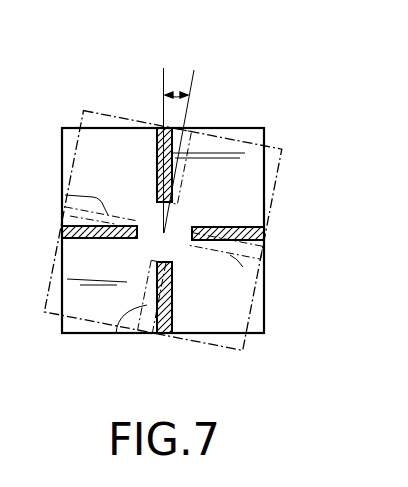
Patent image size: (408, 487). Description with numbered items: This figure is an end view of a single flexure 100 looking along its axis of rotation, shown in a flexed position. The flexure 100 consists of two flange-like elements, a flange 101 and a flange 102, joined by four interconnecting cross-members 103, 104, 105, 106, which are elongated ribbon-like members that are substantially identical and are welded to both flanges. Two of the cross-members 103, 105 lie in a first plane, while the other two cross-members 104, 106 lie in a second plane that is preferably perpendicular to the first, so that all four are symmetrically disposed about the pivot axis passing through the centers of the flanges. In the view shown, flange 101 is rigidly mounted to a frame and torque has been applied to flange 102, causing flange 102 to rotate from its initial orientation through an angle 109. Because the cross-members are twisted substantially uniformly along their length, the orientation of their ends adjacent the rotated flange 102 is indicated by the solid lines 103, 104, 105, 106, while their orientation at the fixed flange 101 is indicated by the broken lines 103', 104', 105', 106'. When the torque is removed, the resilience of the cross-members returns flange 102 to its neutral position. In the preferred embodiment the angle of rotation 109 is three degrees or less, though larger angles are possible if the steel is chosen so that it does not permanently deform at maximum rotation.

The flexure 100 is at (253, 69).
The flange 101 is at (62, 150).
The flange 102 is at (283, 156).
The cross-member 103 is at (170, 158).
The cross-member end at flange 101 103' is at (204, 167).
The cross-member 104 is at (84, 241).
The cross-member end at flange 101 104' is at (71, 205).
The cross-member 105 is at (170, 311).
The cross-member end at flange 101 105' is at (134, 318).
The cross-member 106 is at (253, 222).
The cross-member end at flange 101 106' is at (262, 262).
The angle of rotation 109 is at (176, 92).